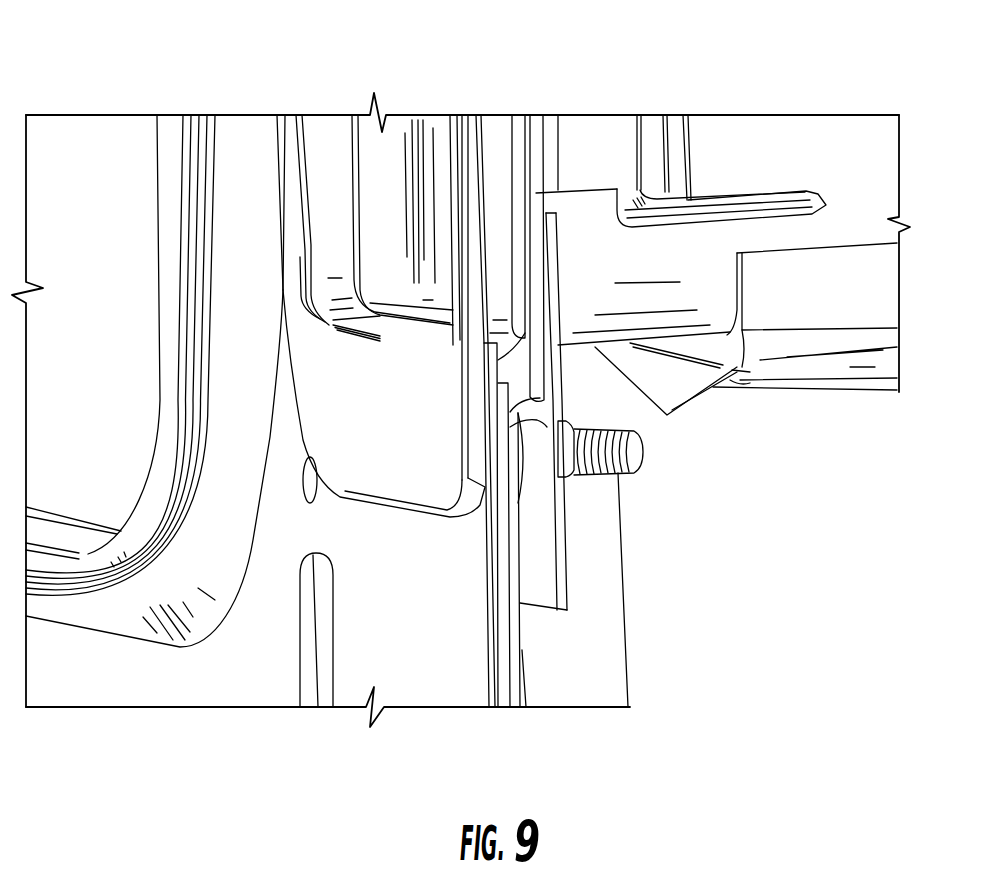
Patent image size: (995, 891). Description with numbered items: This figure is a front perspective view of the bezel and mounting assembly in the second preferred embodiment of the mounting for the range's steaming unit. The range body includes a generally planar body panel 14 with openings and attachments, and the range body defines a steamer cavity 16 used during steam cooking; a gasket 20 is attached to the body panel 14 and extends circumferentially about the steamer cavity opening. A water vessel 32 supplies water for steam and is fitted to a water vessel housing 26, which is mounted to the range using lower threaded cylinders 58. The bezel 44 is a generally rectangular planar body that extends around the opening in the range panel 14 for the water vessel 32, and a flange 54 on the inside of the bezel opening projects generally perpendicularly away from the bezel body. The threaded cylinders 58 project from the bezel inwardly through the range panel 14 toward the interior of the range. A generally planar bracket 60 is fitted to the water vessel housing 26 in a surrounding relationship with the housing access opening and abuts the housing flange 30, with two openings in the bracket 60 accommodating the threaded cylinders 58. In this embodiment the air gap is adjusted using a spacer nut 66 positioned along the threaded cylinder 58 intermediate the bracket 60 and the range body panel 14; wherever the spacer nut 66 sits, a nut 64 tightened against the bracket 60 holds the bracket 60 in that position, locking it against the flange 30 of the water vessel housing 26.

The body panel 14 is at (523, 650).
The steamer cavity 16 is at (110, 176).
The gasket 20 is at (232, 143).
The water vessel housing 26 is at (592, 287).
The housing flange 30 is at (527, 137).
The water vessel 32 is at (393, 150).
The bezel 44 is at (413, 470).
The flange 54 is at (325, 143).
The threaded cylinder 58 is at (643, 443).
The bracket 60 is at (557, 372).
The nut 64 is at (560, 465).
The spacer nut 66 is at (515, 453).